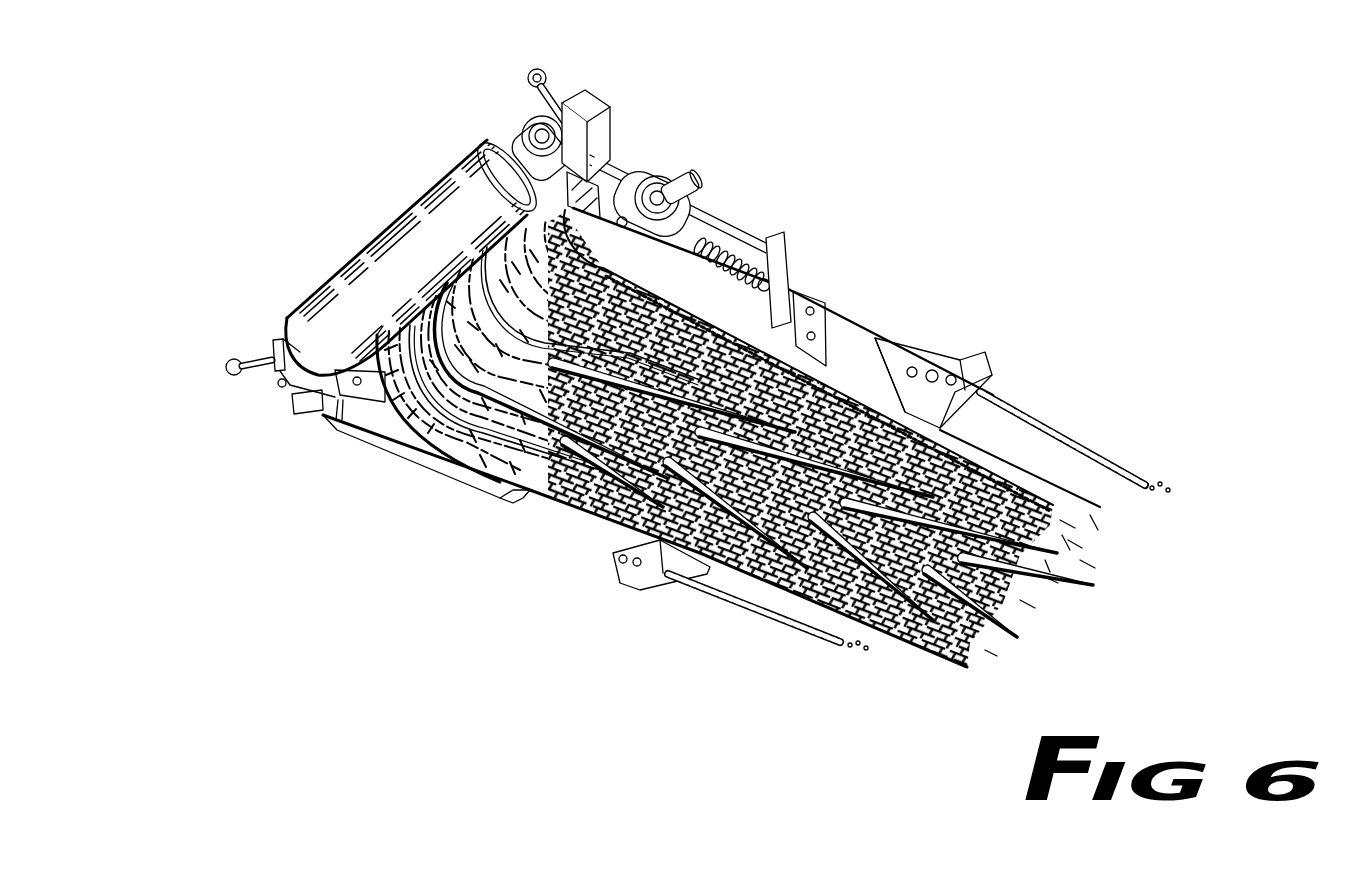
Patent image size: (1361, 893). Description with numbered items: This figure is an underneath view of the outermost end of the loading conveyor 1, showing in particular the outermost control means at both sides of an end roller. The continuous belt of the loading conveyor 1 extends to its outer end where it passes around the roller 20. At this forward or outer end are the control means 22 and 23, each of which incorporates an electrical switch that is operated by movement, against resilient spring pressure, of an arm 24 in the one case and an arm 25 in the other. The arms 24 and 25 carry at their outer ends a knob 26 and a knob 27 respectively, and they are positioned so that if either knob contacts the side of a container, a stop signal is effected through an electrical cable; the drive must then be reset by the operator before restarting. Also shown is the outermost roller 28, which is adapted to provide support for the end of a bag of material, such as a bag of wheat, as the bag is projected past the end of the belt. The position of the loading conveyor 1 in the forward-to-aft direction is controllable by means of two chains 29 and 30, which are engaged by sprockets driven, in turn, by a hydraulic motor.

The loading conveyor 1 is at (840, 335).
The roller 20 is at (660, 240).
The control means 22 is at (613, 127).
The control means 23 is at (295, 412).
The arm 24 is at (565, 95).
The arm 25 is at (268, 350).
The knob 26 is at (528, 80).
The knob 27 is at (226, 370).
The outermost roller 28 is at (387, 240).
The chain 29 is at (1057, 427).
The chain 30 is at (770, 612).